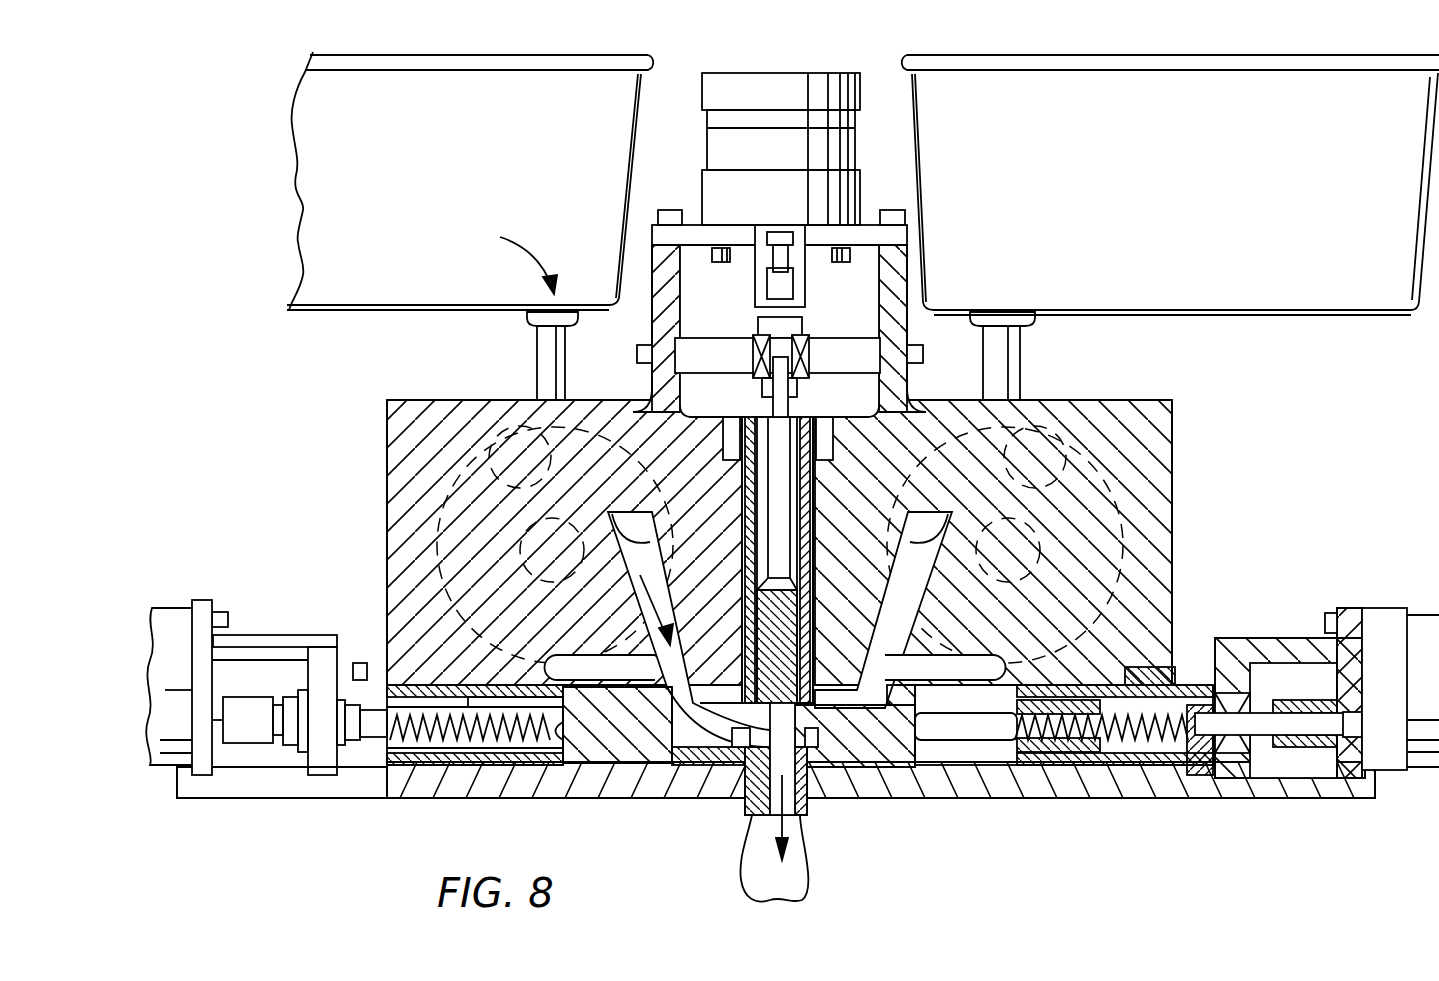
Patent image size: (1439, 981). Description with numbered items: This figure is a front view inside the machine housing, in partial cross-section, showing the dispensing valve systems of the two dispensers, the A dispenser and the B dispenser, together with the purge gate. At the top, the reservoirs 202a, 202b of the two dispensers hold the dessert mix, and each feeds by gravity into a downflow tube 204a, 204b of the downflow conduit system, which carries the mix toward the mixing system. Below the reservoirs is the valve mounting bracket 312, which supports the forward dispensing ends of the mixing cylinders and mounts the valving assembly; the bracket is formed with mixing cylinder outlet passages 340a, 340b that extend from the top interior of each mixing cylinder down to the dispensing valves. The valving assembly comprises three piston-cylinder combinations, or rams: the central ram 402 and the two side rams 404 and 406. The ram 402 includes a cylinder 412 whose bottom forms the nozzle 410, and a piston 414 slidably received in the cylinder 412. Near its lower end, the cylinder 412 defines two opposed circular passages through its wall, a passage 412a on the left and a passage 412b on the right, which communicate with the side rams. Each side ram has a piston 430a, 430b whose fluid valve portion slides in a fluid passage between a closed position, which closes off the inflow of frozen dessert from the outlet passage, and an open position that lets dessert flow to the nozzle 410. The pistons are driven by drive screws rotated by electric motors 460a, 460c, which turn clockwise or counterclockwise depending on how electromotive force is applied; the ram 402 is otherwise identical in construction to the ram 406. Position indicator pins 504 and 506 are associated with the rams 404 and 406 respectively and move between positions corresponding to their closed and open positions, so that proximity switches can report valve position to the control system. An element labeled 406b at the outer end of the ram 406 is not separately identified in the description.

The reservoir 202a is at (470, 181).
The reservoir 202b is at (1170, 185).
The downflow tube 204a is at (553, 385).
The downflow tube 204b is at (1020, 385).
The valve mounting bracket 312 is at (1178, 458).
The mixing cylinder outlet passage 340a is at (665, 642).
The mixing cylinder outlet passage 340b is at (885, 645).
The ram 402 is at (780, 73).
The ram 404 is at (172, 608).
The ram 406 is at (1352, 600).
The second actuator plate 406b is at (1395, 768).
The nozzle 410 is at (748, 860).
The cylinder 412 is at (802, 822).
The passage 412a is at (746, 740).
The passage 412b is at (812, 747).
The piston 414 is at (798, 618).
The piston 430a is at (614, 765).
The piston 430b is at (928, 768).
The electric motor 460a is at (202, 622).
The electric motor 460c is at (707, 165).
The position indicator pin 504 is at (533, 765).
The position indicator pin 506 is at (1005, 768).